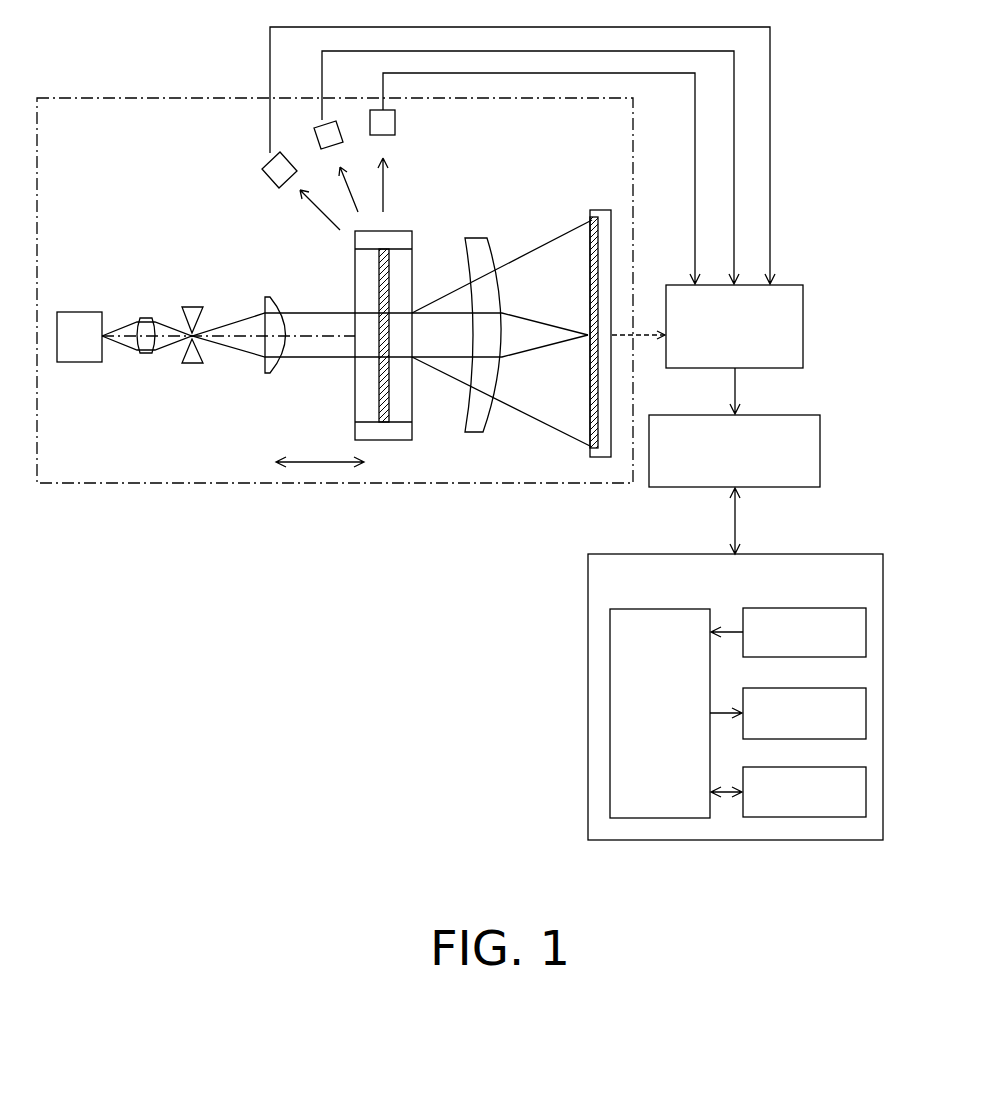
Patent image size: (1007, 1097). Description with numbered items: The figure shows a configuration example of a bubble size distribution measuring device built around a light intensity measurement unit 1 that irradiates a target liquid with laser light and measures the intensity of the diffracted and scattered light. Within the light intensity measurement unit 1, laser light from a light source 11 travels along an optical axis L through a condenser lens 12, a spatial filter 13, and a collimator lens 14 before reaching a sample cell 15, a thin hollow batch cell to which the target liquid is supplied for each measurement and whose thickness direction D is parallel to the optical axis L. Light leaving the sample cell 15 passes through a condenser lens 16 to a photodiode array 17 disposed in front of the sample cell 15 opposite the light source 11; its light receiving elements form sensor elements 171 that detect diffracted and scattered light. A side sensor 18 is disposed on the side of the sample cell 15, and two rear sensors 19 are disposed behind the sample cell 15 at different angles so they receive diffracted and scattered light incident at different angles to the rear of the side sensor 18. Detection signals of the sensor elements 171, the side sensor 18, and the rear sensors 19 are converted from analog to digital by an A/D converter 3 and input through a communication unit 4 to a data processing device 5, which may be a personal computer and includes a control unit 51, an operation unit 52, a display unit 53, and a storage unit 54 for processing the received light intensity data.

The light intensity measurement unit 1 is at (145, 98).
The light source 11 is at (98, 312).
The condenser lens 12 is at (145, 355).
The spatial filter 13 is at (192, 305).
The collimator lens 14 is at (267, 380).
The sample cell 15 is at (356, 259).
The condenser lens 16 is at (465, 240).
The photodiode array 17 is at (601, 210).
The sensor elements 171 is at (592, 215).
The side sensor 18 is at (395, 120).
The rear sensors 19 is at (337, 127).
The A/D converter 3 is at (803, 327).
The communication unit 4 is at (820, 452).
The data processing device 5 is at (603, 583).
The control unit 51 is at (610, 775).
The operation unit 52 is at (866, 633).
The display unit 53 is at (866, 712).
The storage unit 54 is at (866, 792).
The optical axis L is at (333, 342).
The thickness direction D is at (323, 465).